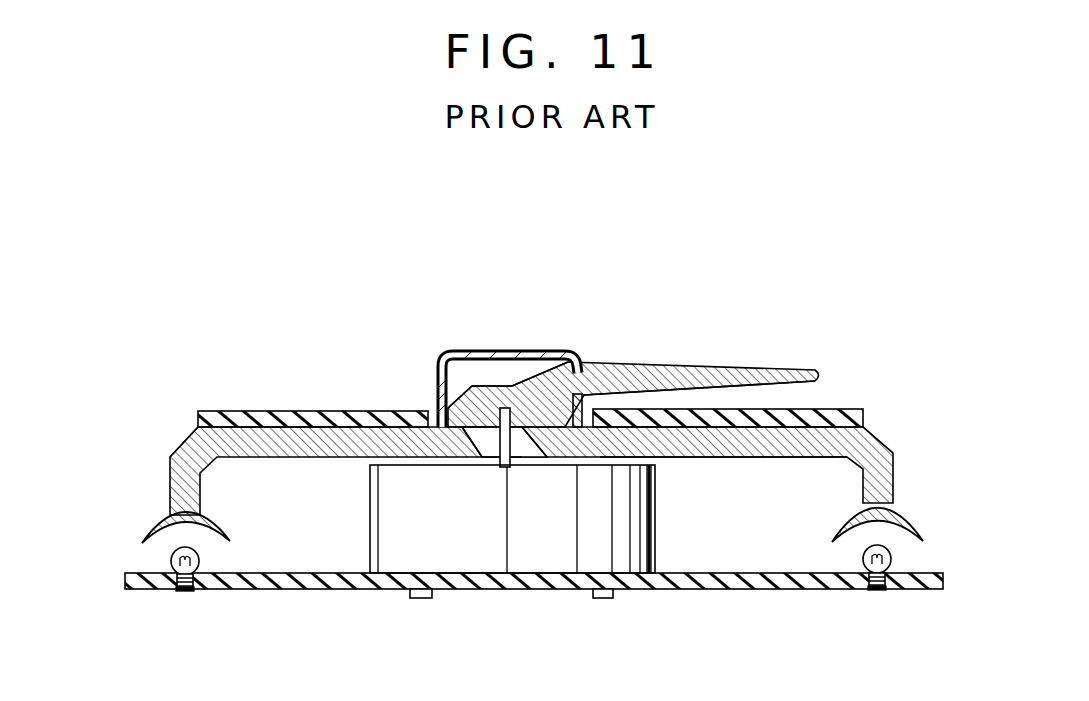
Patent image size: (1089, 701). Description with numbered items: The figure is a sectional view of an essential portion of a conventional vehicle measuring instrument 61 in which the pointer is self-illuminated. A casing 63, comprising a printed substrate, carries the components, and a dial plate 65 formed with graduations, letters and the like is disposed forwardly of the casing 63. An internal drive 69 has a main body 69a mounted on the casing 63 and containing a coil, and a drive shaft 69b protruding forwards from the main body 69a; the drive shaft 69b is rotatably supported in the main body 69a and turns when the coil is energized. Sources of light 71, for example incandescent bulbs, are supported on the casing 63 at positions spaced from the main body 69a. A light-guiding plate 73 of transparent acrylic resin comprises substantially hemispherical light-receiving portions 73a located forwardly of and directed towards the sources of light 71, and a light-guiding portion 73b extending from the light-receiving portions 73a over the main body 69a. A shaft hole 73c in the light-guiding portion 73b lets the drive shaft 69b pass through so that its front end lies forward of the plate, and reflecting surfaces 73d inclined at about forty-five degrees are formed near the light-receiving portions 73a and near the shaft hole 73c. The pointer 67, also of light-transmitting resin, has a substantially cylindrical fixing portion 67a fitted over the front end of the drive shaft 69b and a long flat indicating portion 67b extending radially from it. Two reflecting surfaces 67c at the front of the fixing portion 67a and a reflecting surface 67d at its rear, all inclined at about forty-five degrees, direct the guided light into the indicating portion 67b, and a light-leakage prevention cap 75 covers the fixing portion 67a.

The measuring instrument 61 is at (335, 397).
The casing 63 is at (770, 589).
The dial plate 65 is at (278, 412).
The pointer 67 is at (762, 362).
The fixing portion 67a is at (474, 385).
The indicating portion 67b is at (664, 367).
The reflecting surfaces 67c is at (528, 352).
The reflecting surface 67d is at (575, 352).
The internal drive 69 is at (362, 521).
The main body 69a is at (465, 590).
The drive shaft 69b is at (512, 450).
The sources of light 71 is at (200, 591).
The light-guiding plate 73 is at (905, 457).
The light-receiving portions 73a is at (157, 517).
The light-guiding portion 73b is at (738, 449).
The shaft hole 73c is at (476, 450).
The reflecting surfaces 73d is at (182, 445).
The light-leakage prevention cap 75 is at (447, 352).